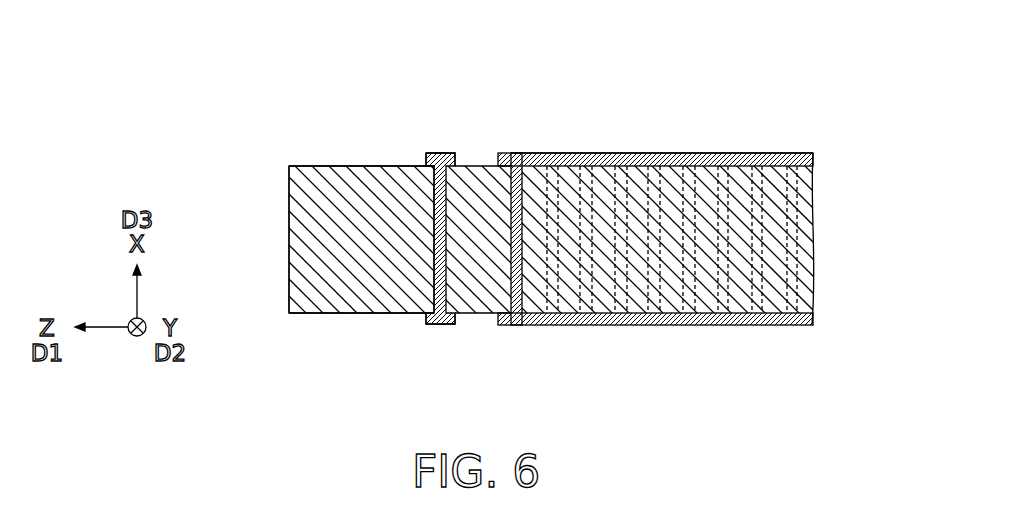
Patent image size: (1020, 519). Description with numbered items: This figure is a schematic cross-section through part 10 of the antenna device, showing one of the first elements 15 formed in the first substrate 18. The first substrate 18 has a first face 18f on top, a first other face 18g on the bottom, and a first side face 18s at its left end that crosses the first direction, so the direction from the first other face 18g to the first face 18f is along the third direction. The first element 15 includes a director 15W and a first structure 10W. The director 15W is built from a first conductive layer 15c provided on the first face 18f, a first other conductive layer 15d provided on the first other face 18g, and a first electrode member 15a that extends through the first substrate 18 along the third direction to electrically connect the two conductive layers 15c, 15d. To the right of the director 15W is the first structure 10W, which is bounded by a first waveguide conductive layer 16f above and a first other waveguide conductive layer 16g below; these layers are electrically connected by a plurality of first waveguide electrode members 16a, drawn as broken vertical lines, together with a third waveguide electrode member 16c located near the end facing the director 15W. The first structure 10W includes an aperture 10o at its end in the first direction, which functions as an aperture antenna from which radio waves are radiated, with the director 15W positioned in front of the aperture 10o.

The multilayer capacitor 10 is at (552, 218).
The first structure 10W is at (694, 139).
The aperture 10o is at (528, 142).
The first element 15 is at (381, 79).
The director 15W is at (461, 126).
The first electrode member 15a is at (433, 212).
The first conductive layer 15c is at (446, 153).
The first other conductive layer 15d is at (437, 325).
The first waveguide electrode members 16a is at (550, 312).
The third waveguide electrode member 16c is at (518, 322).
The first waveguide conductive layer 16f is at (797, 160).
The first other waveguide conductive layer 16g is at (798, 320).
The first substrate 18 is at (303, 240).
The first face 18f is at (330, 165).
The first other face 18g is at (325, 313).
The first side face 18s is at (289, 172).